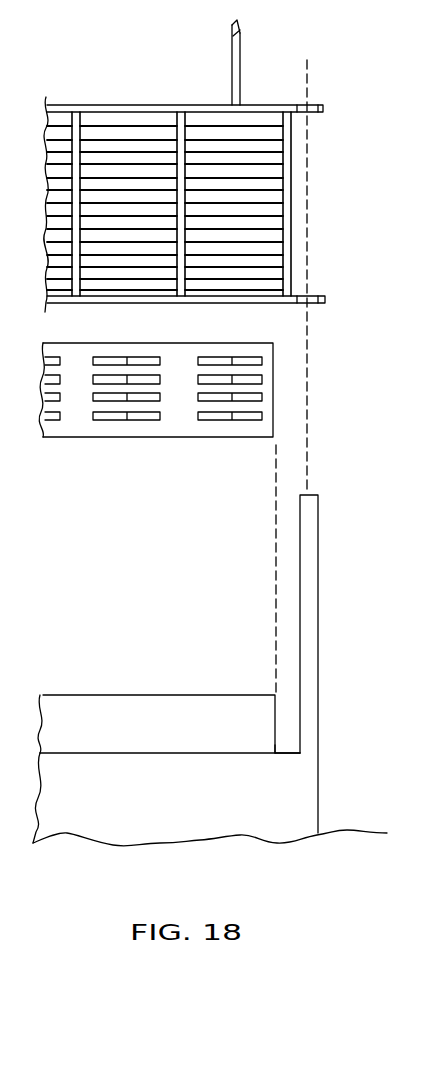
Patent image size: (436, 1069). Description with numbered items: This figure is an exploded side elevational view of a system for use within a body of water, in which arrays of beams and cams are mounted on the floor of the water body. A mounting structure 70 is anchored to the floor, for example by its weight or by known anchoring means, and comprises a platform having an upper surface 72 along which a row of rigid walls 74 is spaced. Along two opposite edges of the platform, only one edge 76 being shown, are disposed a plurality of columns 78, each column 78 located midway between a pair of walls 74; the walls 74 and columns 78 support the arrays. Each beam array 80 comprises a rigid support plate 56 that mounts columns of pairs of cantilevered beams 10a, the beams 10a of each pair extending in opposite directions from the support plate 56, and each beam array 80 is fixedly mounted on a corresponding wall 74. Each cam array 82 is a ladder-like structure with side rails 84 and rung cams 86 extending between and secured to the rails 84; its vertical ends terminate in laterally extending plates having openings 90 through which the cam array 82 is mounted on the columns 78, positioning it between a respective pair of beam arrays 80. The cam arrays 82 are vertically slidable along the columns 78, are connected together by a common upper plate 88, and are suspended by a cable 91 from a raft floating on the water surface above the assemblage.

The cantilevered beams 10a is at (253, 380).
The rigid support plate 56 is at (138, 429).
The mounting structure 70 is at (183, 813).
The upper surface 72 is at (157, 753).
The rigid wall 74 is at (127, 695).
The edge 76 is at (297, 742).
The column 78 is at (307, 598).
The beam array 80 is at (213, 429).
The cam array 82 is at (217, 177).
The side rail 84 is at (78, 124).
The rung cam 86 is at (105, 175).
The common upper plate 88 is at (254, 109).
The opening 90 is at (316, 100).
The cable 91 is at (231, 78).